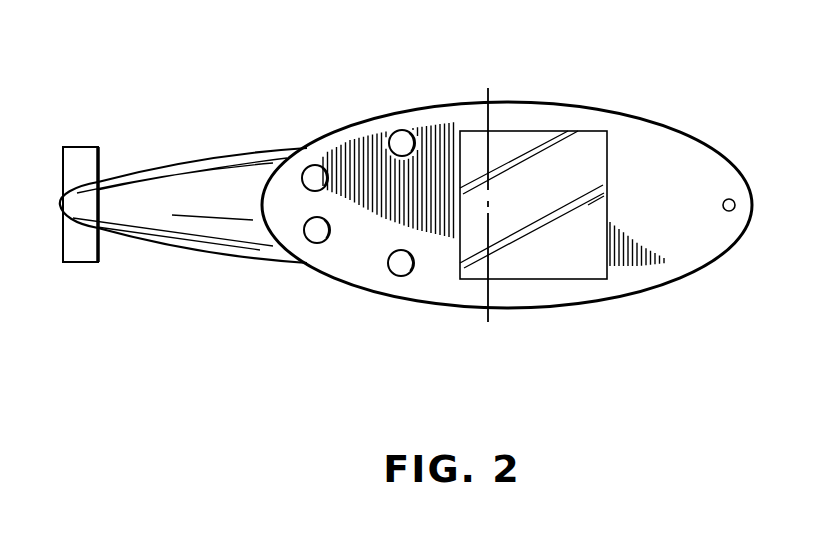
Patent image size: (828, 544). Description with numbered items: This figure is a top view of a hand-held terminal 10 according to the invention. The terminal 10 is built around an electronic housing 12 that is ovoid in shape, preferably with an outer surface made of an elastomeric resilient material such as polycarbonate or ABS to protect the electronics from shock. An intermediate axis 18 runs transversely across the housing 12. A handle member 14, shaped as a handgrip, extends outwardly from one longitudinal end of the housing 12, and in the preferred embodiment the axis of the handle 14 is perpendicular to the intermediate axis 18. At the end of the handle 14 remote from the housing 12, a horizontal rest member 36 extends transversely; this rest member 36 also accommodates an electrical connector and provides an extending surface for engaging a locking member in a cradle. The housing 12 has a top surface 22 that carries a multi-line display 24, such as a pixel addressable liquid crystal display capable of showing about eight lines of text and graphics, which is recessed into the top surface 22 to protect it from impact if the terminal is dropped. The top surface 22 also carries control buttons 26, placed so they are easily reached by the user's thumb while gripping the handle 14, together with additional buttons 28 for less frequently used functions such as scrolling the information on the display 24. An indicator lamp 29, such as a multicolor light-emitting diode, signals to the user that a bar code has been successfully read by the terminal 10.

The hand-held terminal 10 is at (675, 391).
The electronic housing 12 is at (388, 322).
The handle member 14 is at (170, 128).
The intermediate axis 18 is at (489, 97).
The top surface 22 is at (681, 152).
The multi-line display 24 is at (577, 160).
The control buttons 26 is at (318, 178).
The additional buttons 28 is at (404, 143).
The indicator lamp 29 is at (732, 212).
The horizontal rest member 36 is at (100, 250).